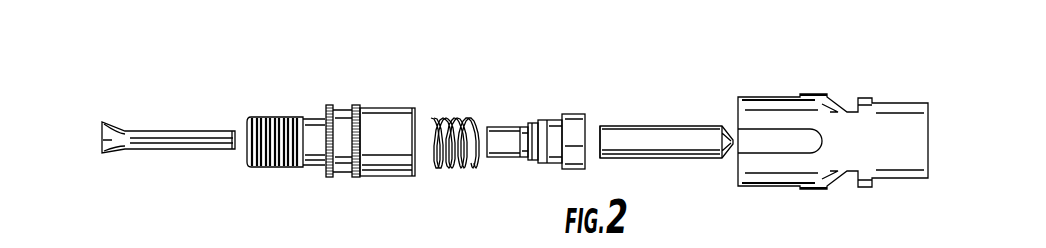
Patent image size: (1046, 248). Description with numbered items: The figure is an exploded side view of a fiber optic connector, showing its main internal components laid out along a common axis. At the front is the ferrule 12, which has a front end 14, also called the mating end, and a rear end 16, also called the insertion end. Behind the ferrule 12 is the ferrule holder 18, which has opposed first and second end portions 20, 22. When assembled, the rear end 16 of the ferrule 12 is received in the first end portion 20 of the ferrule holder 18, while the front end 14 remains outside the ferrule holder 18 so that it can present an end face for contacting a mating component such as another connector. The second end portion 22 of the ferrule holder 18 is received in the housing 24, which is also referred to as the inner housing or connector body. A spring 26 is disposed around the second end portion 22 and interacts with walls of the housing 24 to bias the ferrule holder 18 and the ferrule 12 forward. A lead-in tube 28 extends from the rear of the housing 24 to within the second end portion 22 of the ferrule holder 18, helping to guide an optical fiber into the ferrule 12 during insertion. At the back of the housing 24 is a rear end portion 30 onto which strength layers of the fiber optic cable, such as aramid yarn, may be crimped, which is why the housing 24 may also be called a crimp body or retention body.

The ferrule 12 is at (652, 124).
The front end 14 is at (737, 145).
The rear end 16 is at (603, 127).
The ferrule holder 18 is at (527, 120).
The first end portion 20 is at (568, 113).
The second end portion 22 is at (497, 126).
The housing 24 is at (339, 103).
The spring 26 is at (448, 170).
The lead-in tube 28 is at (170, 130).
The rear end portion 30 is at (250, 118).